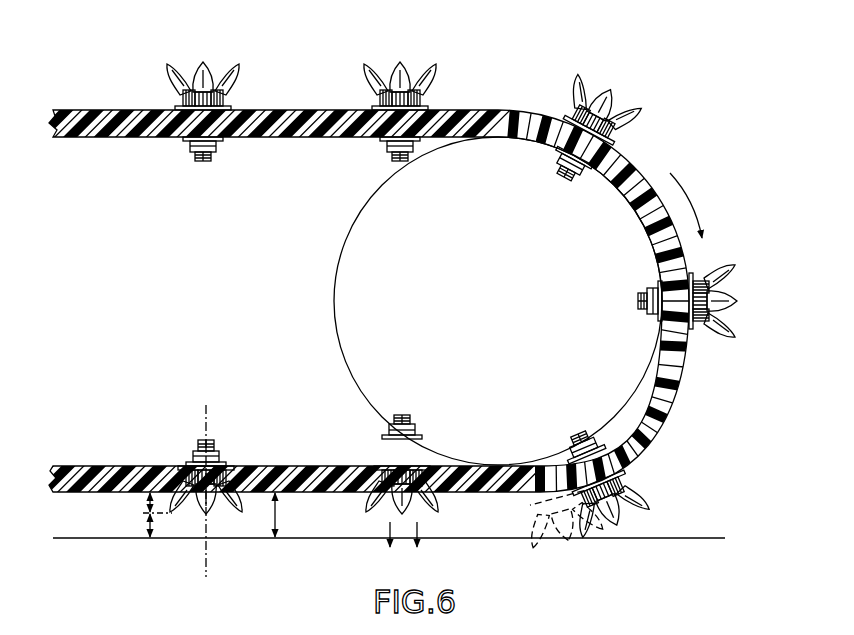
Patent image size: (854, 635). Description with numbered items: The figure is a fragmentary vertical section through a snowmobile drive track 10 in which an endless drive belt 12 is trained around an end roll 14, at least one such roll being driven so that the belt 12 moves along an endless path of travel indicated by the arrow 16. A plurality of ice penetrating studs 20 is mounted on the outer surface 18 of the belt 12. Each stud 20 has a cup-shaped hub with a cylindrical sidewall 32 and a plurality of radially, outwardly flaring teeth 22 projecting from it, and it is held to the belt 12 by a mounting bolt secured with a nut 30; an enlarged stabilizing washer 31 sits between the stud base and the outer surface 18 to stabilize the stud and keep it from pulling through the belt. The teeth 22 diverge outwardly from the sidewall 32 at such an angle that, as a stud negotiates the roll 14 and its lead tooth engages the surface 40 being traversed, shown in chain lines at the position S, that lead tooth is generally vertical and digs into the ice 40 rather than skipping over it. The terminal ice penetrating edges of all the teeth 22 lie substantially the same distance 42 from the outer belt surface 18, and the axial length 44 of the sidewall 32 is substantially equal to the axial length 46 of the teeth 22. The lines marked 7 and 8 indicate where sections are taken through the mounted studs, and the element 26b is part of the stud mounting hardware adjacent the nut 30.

The snowmobile drive track 10 is at (401, 274).
The endless drive belt 12 is at (630, 175).
The end roll 14 is at (348, 246).
The arrow representing path of travel 16 is at (700, 232).
The outer surface of belt 18 is at (650, 418).
The ice penetrating stud 20 is at (411, 58).
The teeth 22 is at (226, 67).
The lock nut 26b is at (216, 451).
The nut 30 is at (193, 456).
The stabilizing washer 31 is at (227, 499).
The sidewall 32 is at (226, 101).
The surface being traversed 40 is at (676, 538).
The distance of tooth edges from outer belt surface 42 is at (275, 521).
The axial length of sidewall 44 is at (148, 509).
The axial length of teeth 46 is at (150, 531).
The section line 7- 7 is at (181, 413).
The section line 8- 8 is at (404, 547).
The position of lead tooth engaging surface S is at (556, 538).